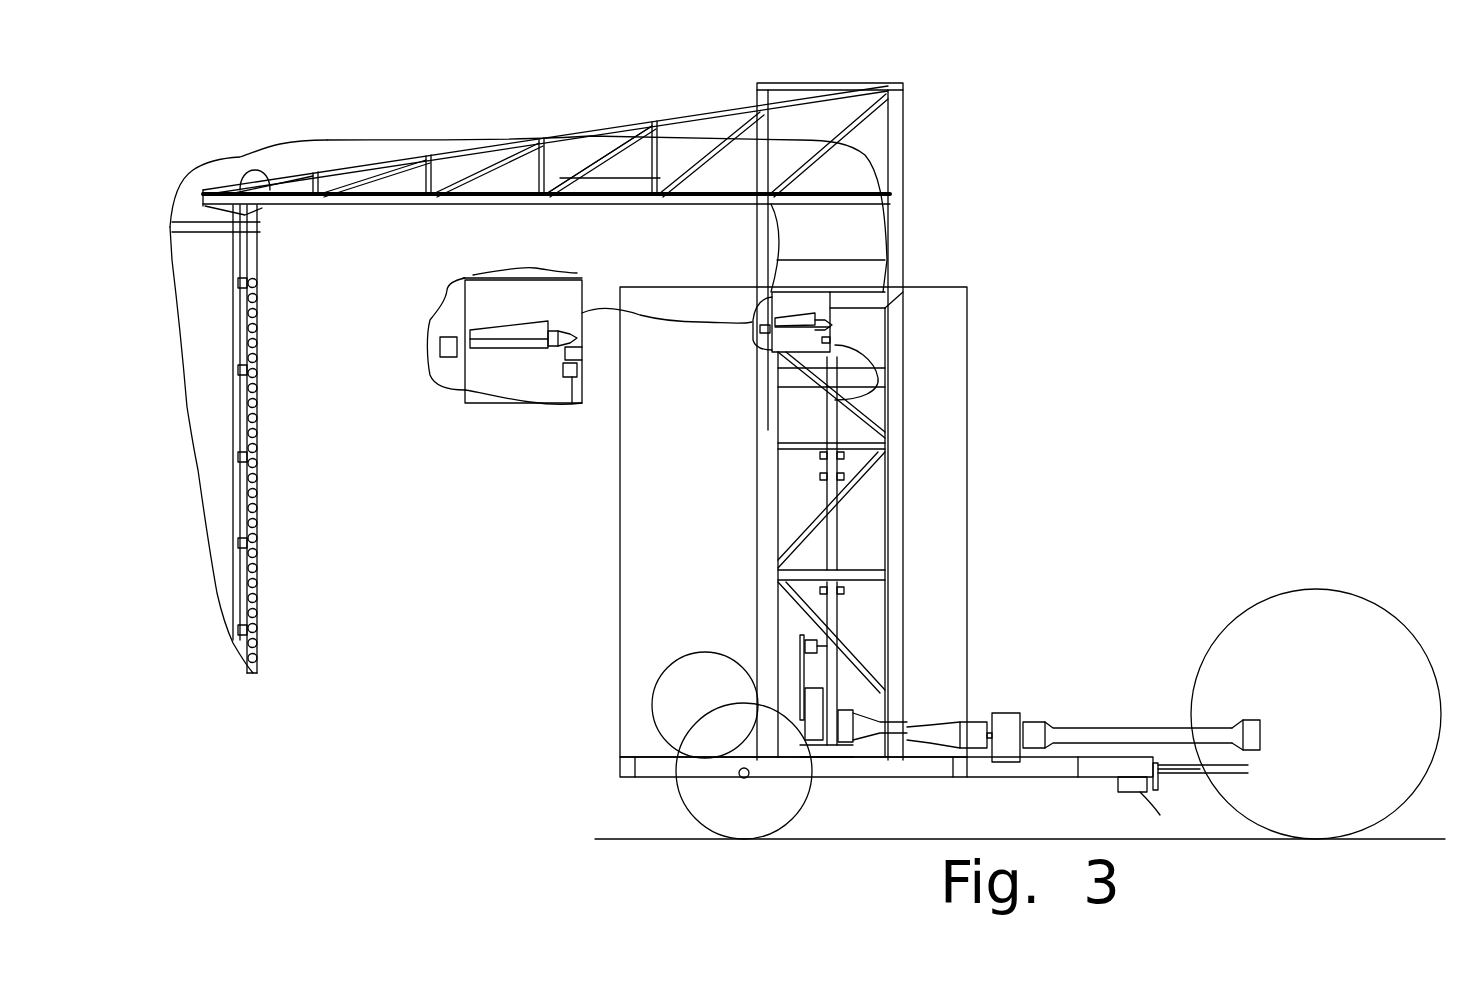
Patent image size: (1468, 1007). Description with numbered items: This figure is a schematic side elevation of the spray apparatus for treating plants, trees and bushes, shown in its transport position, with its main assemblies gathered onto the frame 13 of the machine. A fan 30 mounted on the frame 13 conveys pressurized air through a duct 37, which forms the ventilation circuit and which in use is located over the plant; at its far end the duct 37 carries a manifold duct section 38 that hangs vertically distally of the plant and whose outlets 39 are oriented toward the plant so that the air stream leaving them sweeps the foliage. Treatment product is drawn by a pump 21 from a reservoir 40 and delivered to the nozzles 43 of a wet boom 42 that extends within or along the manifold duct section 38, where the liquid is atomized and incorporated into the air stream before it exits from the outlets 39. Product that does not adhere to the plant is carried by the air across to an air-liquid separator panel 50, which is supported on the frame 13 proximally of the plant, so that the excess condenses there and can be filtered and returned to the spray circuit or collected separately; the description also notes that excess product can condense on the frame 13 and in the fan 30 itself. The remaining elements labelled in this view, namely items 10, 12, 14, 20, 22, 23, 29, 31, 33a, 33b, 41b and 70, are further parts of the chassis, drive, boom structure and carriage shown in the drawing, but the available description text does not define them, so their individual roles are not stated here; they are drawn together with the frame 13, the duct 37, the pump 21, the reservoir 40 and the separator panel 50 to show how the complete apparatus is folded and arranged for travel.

The frame 10 is at (1145, 792).
The wheel 12 is at (682, 797).
The frame 13 is at (907, 452).
The boom top chord 14 is at (675, 120).
The drive shaft 20 is at (930, 723).
The pump 21 is at (1003, 713).
The pump mount 22 is at (845, 635).
The pump plate 23 is at (795, 662).
The boom truss member 29 is at (683, 152).
The fan 30 is at (505, 353).
The nozzle carriage 31 is at (794, 398).
The cover fabric portion 33a is at (853, 168).
The cover fabric portion 33b is at (242, 157).
The duct 37 is at (396, 134).
The manifold duct section 38 is at (190, 442).
The outlets 39 is at (257, 337).
The reservoir 40 is at (726, 653).
The hose 41b is at (612, 178).
The wet boom 42 is at (242, 413).
The nozzles 43 is at (260, 278).
The air-liquid separator panel 50 is at (623, 516).
The tire 70 is at (1330, 589).